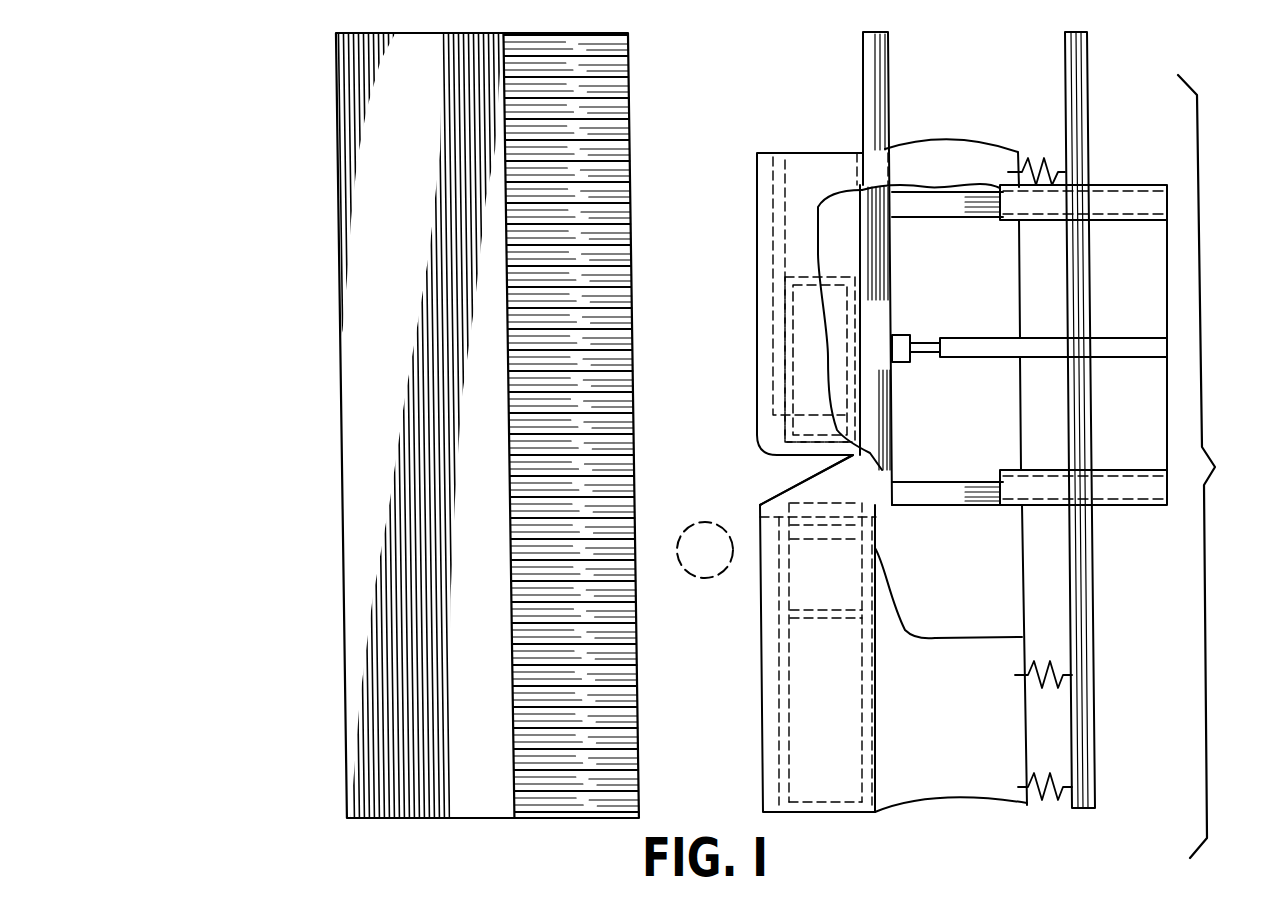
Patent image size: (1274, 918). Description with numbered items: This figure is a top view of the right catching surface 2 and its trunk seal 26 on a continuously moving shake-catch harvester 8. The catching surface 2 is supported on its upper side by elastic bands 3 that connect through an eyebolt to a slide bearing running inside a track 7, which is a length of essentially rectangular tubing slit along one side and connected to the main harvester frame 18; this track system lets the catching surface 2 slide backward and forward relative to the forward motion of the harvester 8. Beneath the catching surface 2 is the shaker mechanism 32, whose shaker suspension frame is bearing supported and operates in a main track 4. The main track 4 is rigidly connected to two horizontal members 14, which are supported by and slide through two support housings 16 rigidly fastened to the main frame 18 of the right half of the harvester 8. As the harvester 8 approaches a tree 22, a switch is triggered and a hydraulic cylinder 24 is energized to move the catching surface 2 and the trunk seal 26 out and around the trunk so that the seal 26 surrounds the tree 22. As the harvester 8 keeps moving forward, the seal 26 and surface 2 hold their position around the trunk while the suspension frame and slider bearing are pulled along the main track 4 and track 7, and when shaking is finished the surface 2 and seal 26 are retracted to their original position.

The right catching surface 2 is at (946, 783).
The elastic bands 3 is at (1032, 164).
The main track 4 is at (886, 322).
The track 7 is at (1094, 606).
The harvester 8 is at (1224, 463).
The horizontal members 14 is at (930, 210).
The support housings 16 is at (1140, 222).
The main harvester frame 18 is at (472, 425).
The tree 22 is at (705, 578).
The hydraulic cylinder 24 is at (1005, 362).
The trunk seal 26 is at (815, 492).
The shaker mechanism 32 is at (768, 392).